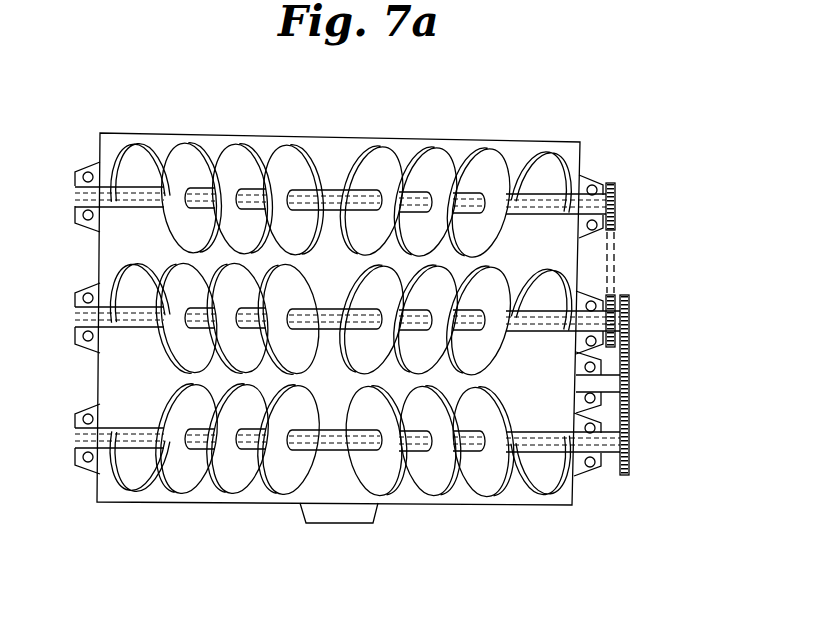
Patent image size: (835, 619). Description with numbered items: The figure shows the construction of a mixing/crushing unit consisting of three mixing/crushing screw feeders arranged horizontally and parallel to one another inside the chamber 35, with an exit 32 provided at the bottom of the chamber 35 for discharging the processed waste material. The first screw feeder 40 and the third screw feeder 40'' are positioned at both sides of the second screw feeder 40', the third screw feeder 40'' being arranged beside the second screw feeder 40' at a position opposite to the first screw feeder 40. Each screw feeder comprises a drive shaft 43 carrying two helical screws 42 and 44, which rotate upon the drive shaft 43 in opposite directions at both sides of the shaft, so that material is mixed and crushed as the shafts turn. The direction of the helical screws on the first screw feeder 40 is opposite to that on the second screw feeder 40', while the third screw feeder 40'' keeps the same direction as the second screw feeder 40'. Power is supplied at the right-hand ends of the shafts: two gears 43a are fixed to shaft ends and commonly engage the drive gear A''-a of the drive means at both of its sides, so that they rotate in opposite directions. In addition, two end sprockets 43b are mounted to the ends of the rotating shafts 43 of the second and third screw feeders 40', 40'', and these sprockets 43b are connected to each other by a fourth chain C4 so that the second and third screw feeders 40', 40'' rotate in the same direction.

The chamber 35 is at (122, 371).
The exit 32 is at (302, 522).
The first screw feeder 40 is at (338, 475).
The second screw feeder 40' is at (343, 239).
The third screw feeder 40'' is at (343, 170).
The helical screw 42 is at (172, 485).
The helical screw 44 is at (437, 488).
The drive shaft 43 is at (546, 210).
The gear 43a is at (630, 335).
The end sprocket 43b is at (616, 198).
The fourth chain C4 is at (618, 268).
The drive gear A''-a is at (657, 400).